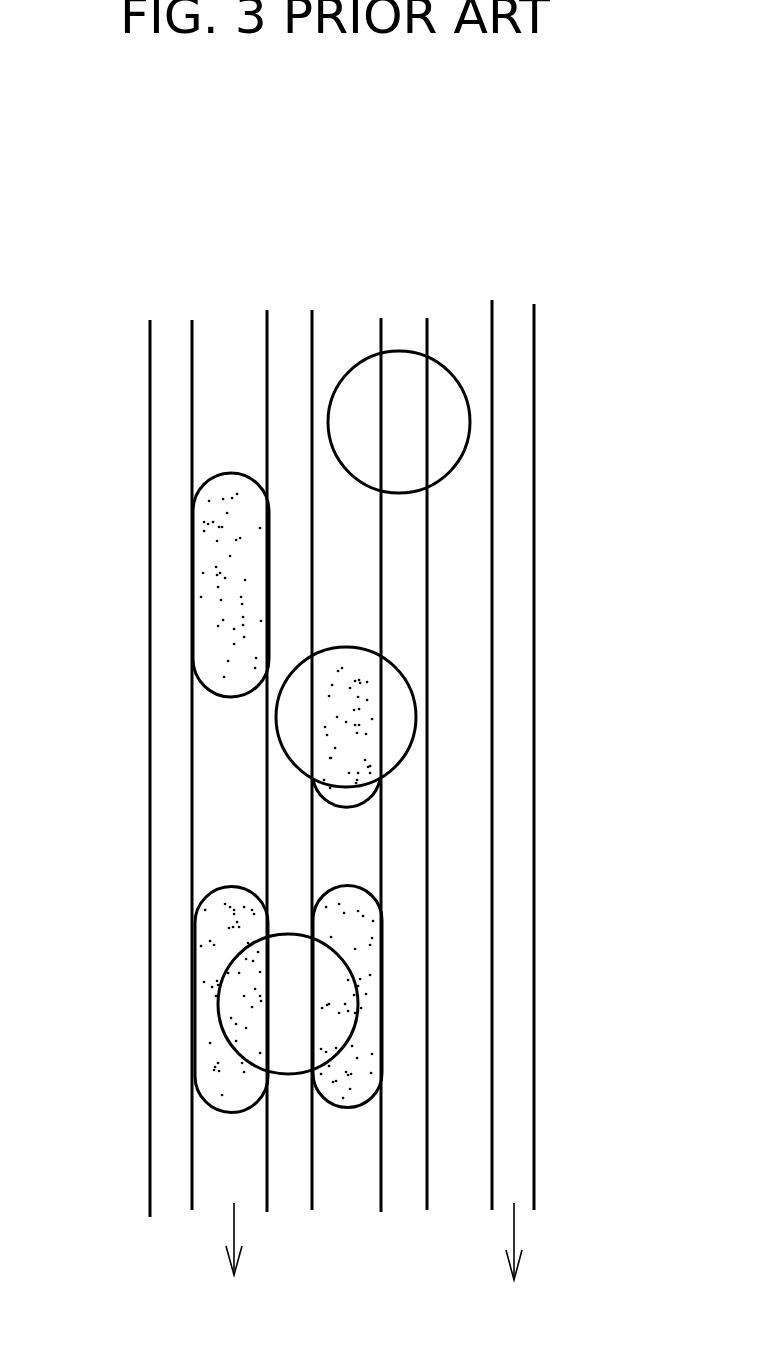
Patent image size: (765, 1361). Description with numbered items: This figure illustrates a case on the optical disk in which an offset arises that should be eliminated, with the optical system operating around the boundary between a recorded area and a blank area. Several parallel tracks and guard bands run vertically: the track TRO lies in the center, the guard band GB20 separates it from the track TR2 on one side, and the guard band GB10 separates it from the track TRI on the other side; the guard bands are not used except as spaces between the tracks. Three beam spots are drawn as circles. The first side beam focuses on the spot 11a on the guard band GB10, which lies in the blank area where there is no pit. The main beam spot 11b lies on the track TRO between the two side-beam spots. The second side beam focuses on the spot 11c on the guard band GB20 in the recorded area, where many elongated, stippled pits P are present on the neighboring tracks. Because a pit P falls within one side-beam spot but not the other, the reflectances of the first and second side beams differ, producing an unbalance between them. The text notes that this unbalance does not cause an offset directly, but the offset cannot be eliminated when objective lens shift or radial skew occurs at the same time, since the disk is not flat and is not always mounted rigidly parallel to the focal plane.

The track TR2 is at (228, 338).
The guard band GB20 is at (290, 322).
The track TRO is at (340, 335).
The guard band GB10 is at (408, 320).
The track TRI is at (454, 330).
The spot 11a is at (445, 395).
The spot 11b is at (383, 703).
The spot 11c is at (288, 1037).
The pit P is at (217, 592).